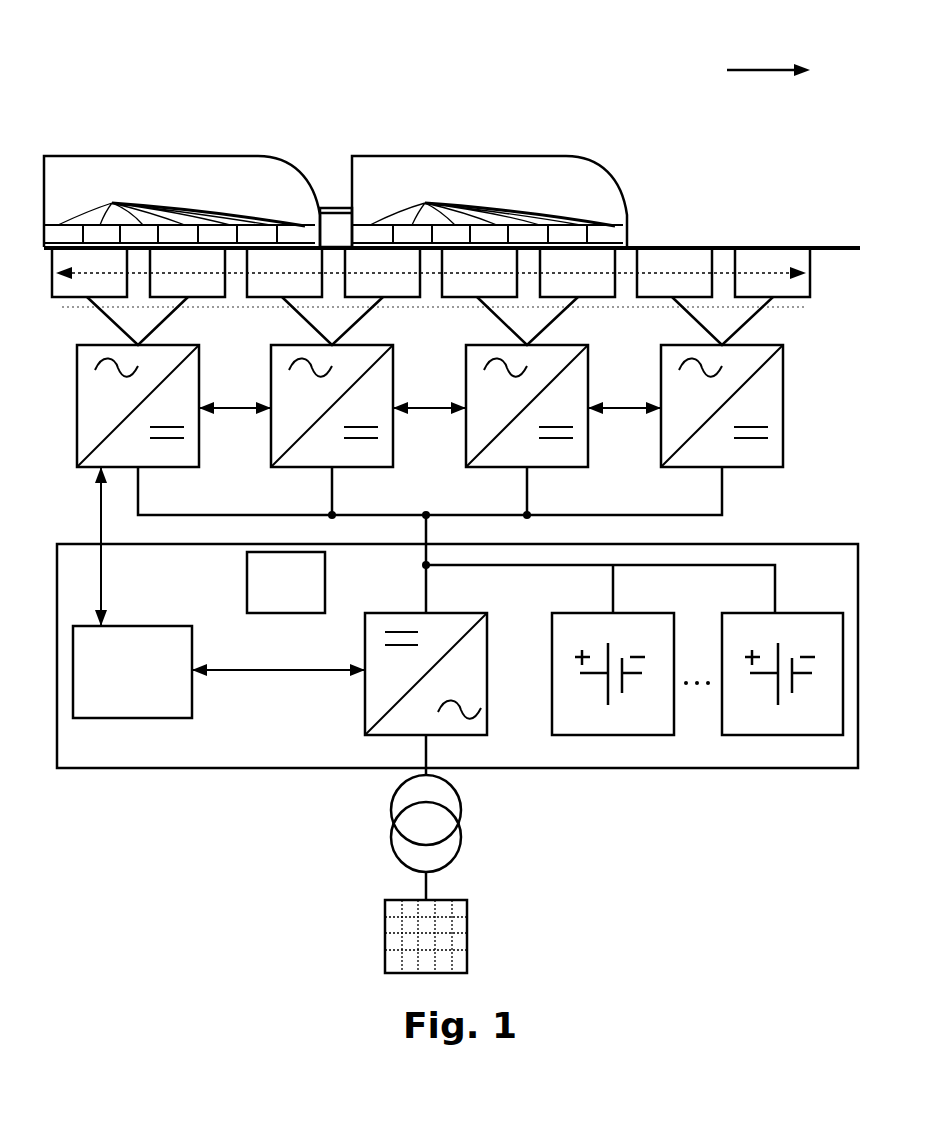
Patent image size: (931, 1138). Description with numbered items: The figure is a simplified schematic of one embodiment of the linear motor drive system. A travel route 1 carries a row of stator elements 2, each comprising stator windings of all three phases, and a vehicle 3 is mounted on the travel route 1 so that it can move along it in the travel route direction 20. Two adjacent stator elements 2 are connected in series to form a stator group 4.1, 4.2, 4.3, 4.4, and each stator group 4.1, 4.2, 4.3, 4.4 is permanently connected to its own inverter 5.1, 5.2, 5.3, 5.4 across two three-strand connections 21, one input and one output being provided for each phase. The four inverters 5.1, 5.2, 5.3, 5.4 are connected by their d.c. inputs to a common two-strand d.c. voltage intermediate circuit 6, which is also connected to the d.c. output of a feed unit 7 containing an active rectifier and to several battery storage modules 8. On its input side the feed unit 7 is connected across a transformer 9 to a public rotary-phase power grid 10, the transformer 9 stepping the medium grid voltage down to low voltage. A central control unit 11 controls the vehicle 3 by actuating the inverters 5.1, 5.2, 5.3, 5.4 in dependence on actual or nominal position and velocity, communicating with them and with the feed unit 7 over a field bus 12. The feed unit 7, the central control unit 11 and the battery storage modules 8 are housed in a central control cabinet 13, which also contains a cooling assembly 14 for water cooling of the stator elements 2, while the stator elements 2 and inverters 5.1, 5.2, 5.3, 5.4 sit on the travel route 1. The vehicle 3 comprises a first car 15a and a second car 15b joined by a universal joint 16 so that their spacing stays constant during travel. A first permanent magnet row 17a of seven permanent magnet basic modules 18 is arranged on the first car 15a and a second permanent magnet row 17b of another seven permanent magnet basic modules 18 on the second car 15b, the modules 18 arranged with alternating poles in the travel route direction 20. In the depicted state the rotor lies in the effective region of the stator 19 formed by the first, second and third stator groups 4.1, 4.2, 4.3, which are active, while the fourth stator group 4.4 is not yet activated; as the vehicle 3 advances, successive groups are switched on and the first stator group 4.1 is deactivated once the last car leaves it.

The travel route 1 is at (820, 247).
The stator elements 2 is at (52, 280).
The vehicle 3 is at (296, 94).
The first stator group 4.1 is at (50, 300).
The second stator group 4.2 is at (245, 300).
The third stator group 4.3 is at (440, 300).
The fourth stator group 4.4 is at (635, 300).
The inverter 5.1 is at (77, 425).
The inverter 5.2 is at (271, 425).
The inverter 5.3 is at (466, 425).
The inverter 5.4 is at (661, 425).
The d.c. voltage intermediate circuit 6 is at (690, 516).
The feed unit 7 is at (372, 613).
The battery storage modules 8 is at (597, 613).
The transformer 9 is at (458, 808).
The public rotary-phase power grid 10 is at (465, 925).
The central control unit 11 is at (166, 685).
The field bus 12 is at (240, 405).
The central control cabinet 13 is at (190, 768).
The cooling assembly 14 is at (280, 613).
The first car 15a is at (430, 155).
The second car 15b is at (212, 154).
The universal joint 16 is at (335, 206).
The first permanent magnet row 17a is at (504, 197).
The second permanent magnet row 17b is at (192, 197).
The permanent magnet basic modules 18 is at (319, 201).
The stator 19 is at (725, 272).
The travel route direction 20 is at (790, 62).
The three-strand connections 21 is at (106, 315).